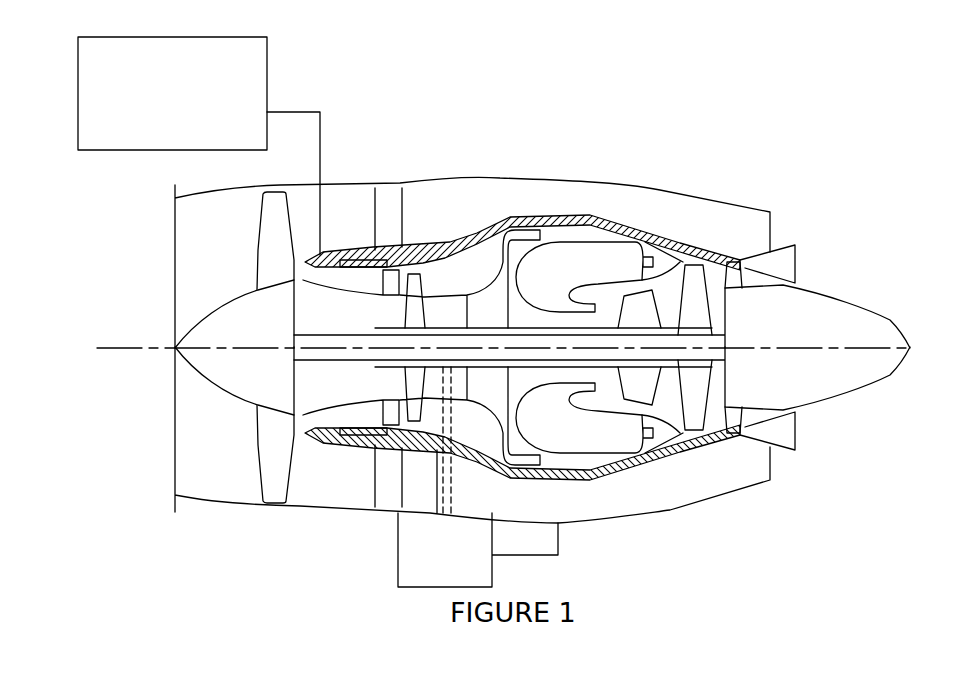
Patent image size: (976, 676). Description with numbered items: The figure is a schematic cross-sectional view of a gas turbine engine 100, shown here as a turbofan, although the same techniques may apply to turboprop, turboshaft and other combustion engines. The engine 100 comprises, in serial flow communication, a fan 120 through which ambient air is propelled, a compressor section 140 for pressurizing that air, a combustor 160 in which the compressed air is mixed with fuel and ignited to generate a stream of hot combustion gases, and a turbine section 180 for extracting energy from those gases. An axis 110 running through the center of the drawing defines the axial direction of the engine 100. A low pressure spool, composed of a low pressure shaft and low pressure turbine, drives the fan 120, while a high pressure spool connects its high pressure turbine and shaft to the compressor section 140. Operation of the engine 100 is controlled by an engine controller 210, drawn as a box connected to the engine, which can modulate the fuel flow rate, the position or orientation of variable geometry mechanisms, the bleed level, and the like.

The gas turbine engine 100 is at (680, 141).
The axis 110 is at (118, 345).
The fan 120 is at (272, 448).
The compressor section 140 is at (440, 282).
The combustor 160 is at (580, 255).
The turbine section 180 is at (662, 430).
The engine controller 210 is at (199, 146).